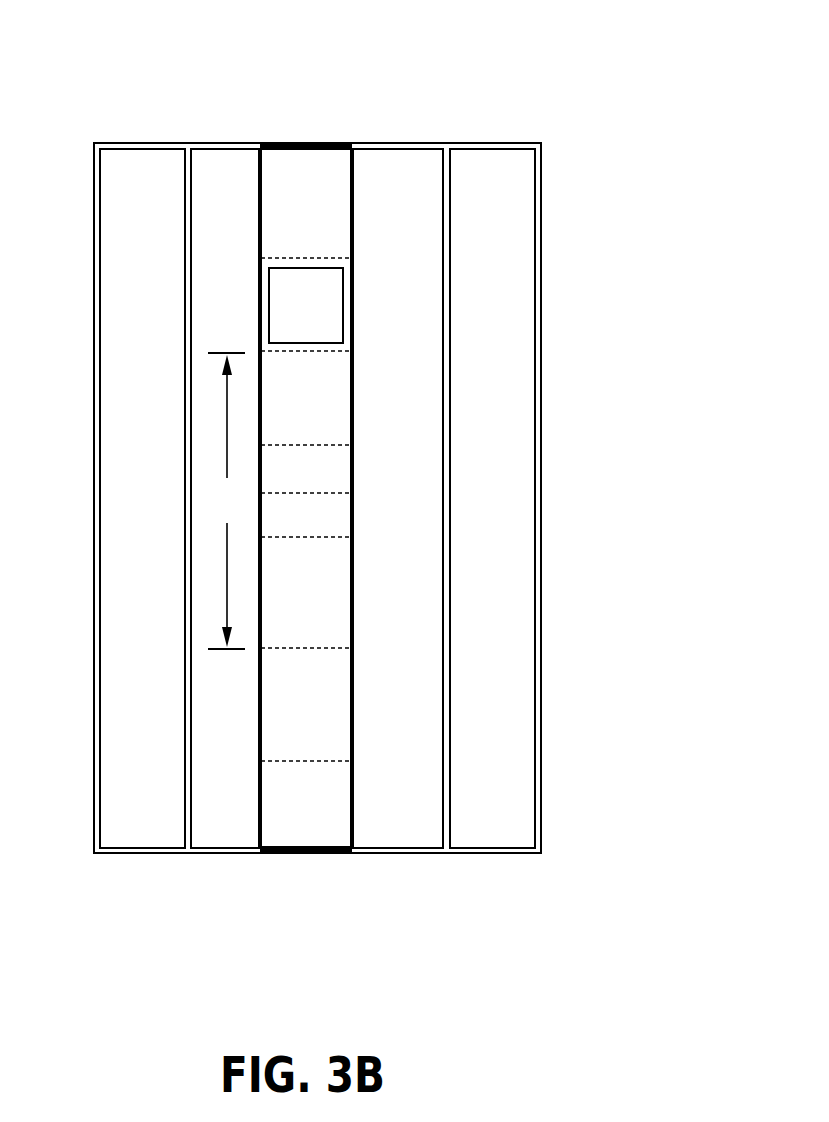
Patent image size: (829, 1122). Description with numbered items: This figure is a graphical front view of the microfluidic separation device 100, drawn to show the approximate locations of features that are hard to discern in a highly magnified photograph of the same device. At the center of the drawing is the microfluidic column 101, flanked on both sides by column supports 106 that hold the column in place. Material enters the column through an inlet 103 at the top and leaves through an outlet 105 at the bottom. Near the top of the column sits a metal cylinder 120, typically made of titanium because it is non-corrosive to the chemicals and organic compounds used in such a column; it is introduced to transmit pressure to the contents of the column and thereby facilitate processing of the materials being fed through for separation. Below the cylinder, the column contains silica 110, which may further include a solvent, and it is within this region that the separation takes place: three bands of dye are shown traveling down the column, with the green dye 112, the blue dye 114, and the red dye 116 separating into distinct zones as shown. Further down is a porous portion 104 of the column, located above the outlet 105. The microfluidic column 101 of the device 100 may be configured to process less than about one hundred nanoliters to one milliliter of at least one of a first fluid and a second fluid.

The microfluidic separation device 100 is at (478, 90).
The microfluidic column 101 is at (352, 208).
The inlet 103 is at (307, 143).
The porous portion 104 is at (336, 713).
The outlet 105 is at (307, 855).
The column supports 106 is at (132, 831).
The silica 110 is at (225, 501).
The green dye 112 is at (332, 470).
The blue dye 114 is at (333, 517).
The red dye 116 is at (333, 598).
The metal cylinder 120 is at (330, 303).